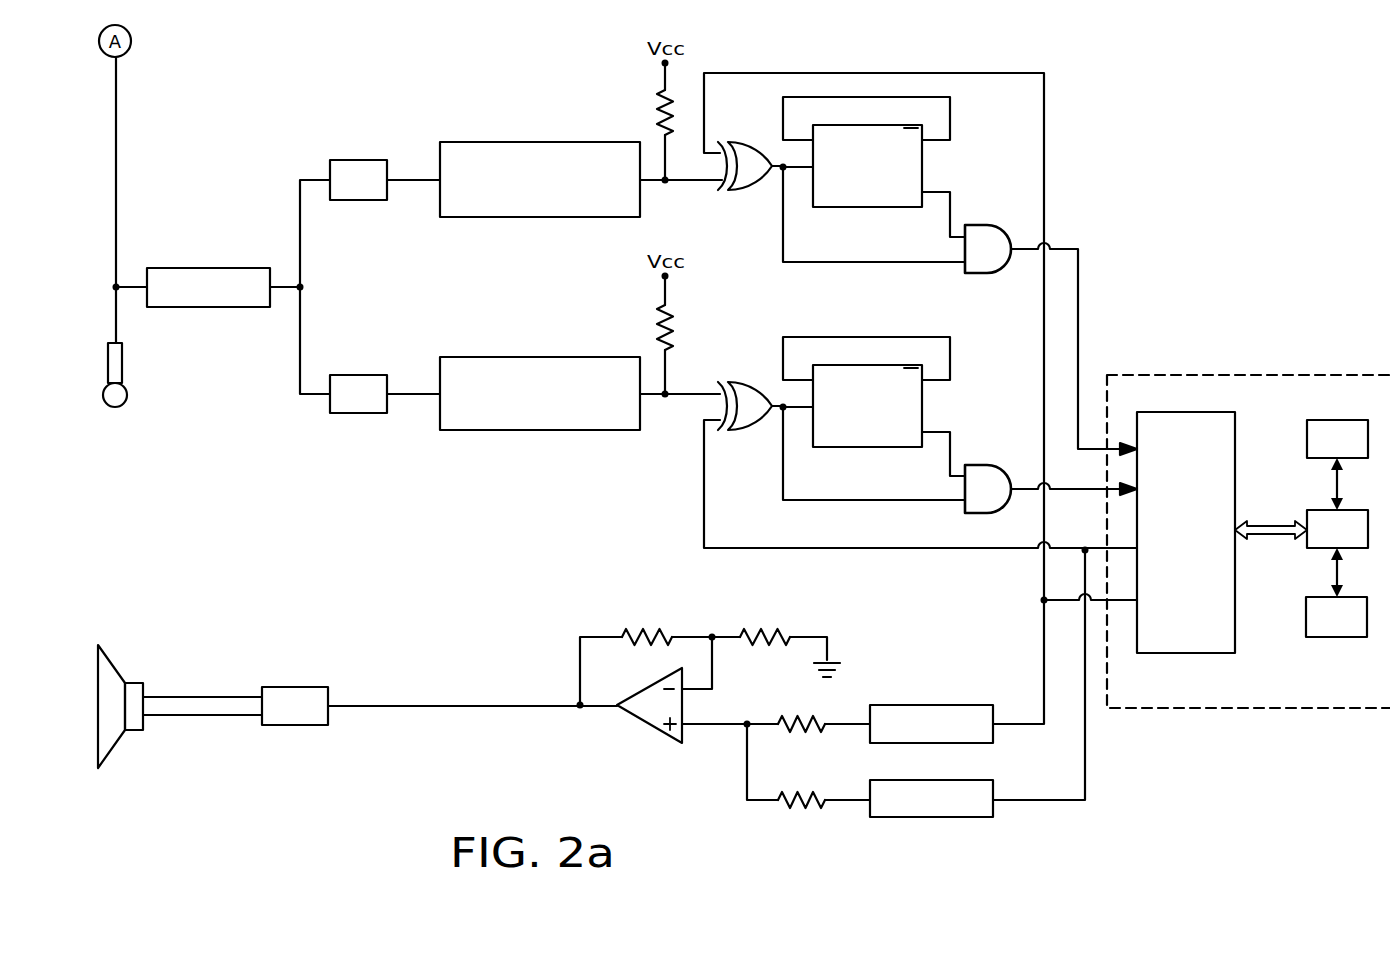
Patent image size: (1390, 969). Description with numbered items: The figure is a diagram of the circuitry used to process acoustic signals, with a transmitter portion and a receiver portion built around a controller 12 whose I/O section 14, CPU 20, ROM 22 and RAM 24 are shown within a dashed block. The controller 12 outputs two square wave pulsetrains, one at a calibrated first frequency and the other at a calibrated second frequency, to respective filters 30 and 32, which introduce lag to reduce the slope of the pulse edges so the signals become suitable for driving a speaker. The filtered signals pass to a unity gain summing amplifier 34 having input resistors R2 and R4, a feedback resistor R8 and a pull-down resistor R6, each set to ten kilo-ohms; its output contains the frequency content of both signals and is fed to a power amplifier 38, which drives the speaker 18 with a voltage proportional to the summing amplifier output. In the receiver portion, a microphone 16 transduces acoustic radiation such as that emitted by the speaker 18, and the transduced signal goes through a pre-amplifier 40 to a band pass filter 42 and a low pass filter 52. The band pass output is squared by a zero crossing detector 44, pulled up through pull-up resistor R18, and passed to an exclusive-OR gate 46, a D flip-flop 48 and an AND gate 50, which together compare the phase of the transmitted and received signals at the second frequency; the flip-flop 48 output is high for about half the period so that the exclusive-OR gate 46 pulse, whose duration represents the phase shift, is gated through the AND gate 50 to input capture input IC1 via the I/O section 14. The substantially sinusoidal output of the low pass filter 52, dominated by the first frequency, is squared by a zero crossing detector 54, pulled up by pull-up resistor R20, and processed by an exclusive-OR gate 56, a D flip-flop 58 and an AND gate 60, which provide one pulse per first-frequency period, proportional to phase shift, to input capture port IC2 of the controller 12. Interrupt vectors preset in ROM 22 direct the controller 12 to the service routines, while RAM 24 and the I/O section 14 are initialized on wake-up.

The controller 12 is at (1249, 365).
The input/output section 14 is at (1212, 421).
The microphone 16 is at (118, 372).
The speaker 18 is at (110, 675).
The CPU 20 is at (1318, 510).
The ROM 22 is at (1327, 421).
The RAM 24 is at (1318, 597).
The filter 30 is at (912, 705).
The filter 32 is at (953, 815).
The summing amplifier 34 is at (647, 715).
The power amplifier 38 is at (285, 724).
The pre-amplifier 40 is at (213, 268).
The band pass filter 42 is at (357, 160).
The zero crossing detector 44 is at (552, 143).
The exclusive-OR gate 46 is at (750, 177).
The D flip-flop 48 is at (870, 198).
The AND gate 50 is at (993, 235).
The low pass filter 52 is at (377, 413).
The zero crossing detector 54 is at (525, 430).
The exclusive-OR gate 56 is at (752, 397).
The D flip-flop 58 is at (868, 438).
The AND gate 60 is at (980, 480).
The pull-up resistor R18 is at (660, 107).
The pull-up resistor R20 is at (660, 335).
The feedback resistor R8 is at (655, 633).
The pull-down resistor R6 is at (757, 632).
The input resistor R2 is at (793, 732).
The input resistor R4 is at (803, 806).